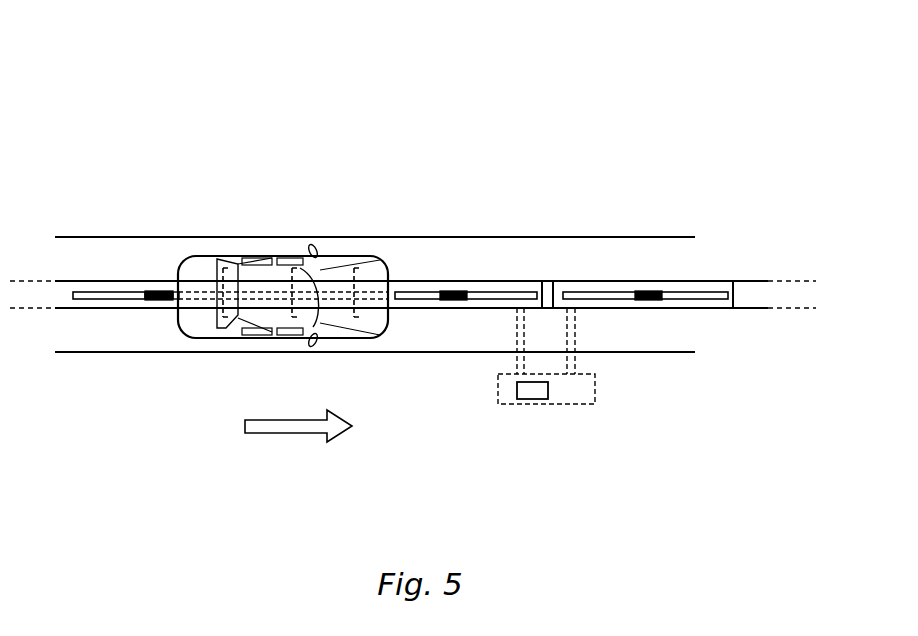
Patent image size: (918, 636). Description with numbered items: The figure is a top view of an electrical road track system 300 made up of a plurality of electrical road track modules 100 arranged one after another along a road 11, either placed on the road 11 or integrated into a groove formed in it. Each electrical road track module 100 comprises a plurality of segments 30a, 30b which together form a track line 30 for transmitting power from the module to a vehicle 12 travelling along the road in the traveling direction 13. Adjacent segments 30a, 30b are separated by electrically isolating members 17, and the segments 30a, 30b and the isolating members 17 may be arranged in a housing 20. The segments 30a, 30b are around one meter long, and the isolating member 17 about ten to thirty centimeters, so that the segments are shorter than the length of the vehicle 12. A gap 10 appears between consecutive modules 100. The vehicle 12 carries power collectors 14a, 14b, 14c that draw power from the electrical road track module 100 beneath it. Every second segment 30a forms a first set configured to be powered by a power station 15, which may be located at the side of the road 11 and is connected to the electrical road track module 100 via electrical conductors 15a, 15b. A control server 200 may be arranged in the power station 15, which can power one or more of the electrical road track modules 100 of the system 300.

The electrical road track system 300 is at (410, 120).
The road 11 is at (72, 255).
The gap between charging units 10 is at (530, 258).
The vehicle 12 is at (268, 322).
The traveling direction 13 is at (297, 428).
The power collector 14a is at (215, 293).
The power collector 14b is at (305, 258).
The power collector 14c is at (356, 278).
The power station 15 is at (567, 393).
The conductor 15a is at (515, 338).
The conductor 15b is at (525, 320).
The electrically isolating member 17 is at (167, 300).
The housing 20 is at (448, 307).
The track line 30 is at (104, 285).
The segment 30a is at (107, 293).
The segment 30b is at (215, 293).
The electrical road track module 100 is at (430, 250).
The control server 200 is at (522, 400).